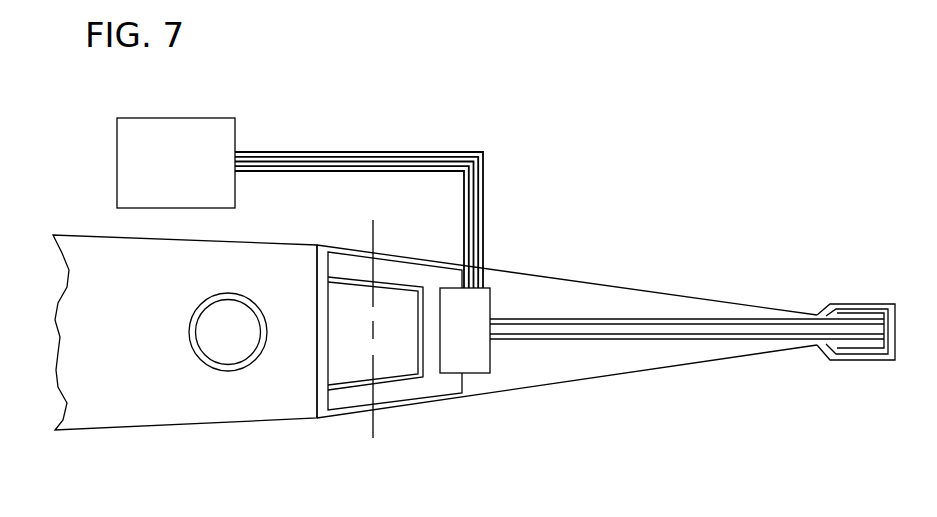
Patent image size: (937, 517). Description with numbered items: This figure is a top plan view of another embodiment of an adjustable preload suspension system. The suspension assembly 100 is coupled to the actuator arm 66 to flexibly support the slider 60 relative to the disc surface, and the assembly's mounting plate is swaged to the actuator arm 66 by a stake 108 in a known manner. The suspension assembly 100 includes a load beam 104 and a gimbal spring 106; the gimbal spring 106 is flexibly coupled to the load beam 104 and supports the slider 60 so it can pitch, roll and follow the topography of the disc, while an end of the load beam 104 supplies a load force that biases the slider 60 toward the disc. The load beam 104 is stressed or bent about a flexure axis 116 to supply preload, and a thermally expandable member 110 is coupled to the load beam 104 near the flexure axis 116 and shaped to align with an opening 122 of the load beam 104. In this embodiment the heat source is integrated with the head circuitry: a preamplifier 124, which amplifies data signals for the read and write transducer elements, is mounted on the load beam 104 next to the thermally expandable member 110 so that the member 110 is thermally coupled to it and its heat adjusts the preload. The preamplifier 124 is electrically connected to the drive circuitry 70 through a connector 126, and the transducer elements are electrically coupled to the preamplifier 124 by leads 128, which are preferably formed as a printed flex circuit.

The slider 60 is at (840, 302).
The actuator arm 66 is at (110, 391).
The drive circuitry 70 is at (204, 108).
The suspension assembly 100 is at (582, 272).
The load beam 104 is at (620, 367).
The gimbal spring 106 is at (803, 352).
The stake 108 is at (255, 352).
The thermally expandable member 110 is at (412, 270).
The flexure axis 116 is at (373, 438).
The opening 122 is at (347, 308).
The preamplifier 124 is at (485, 340).
The connector 126 is at (345, 152).
The leads 128 is at (653, 333).